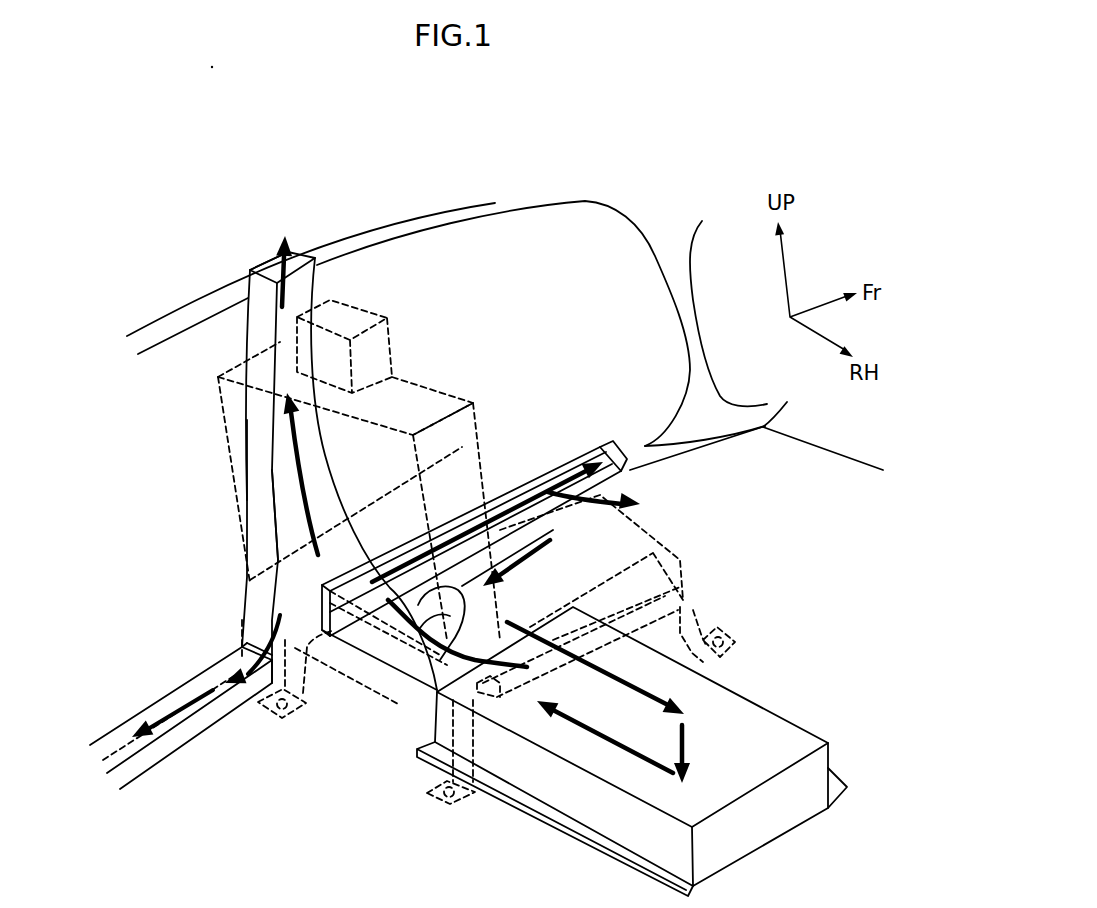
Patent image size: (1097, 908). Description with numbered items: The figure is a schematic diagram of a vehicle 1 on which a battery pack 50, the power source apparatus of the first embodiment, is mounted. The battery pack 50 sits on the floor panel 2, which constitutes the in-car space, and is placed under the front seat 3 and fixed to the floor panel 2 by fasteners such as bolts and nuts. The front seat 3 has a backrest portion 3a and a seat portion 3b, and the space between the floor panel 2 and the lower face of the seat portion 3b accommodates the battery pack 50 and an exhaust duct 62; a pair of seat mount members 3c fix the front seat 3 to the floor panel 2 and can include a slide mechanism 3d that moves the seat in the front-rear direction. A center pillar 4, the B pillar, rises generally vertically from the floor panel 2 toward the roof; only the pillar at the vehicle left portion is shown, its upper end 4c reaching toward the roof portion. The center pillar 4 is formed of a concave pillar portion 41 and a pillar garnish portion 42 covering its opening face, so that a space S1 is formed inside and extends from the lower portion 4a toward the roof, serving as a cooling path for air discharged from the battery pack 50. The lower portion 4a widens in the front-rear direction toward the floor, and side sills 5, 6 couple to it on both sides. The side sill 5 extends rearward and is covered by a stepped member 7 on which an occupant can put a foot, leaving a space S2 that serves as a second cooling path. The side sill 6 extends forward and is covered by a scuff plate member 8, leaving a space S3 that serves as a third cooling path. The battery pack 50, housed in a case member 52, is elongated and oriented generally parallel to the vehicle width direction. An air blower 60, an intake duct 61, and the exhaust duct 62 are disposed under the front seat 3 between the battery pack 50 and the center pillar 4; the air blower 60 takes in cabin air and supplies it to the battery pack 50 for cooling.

The vehicle 1 is at (607, 172).
The floor panel 2 is at (810, 467).
The front seat 3 is at (412, 368).
The backrest portion 3a is at (440, 400).
The seat portion 3b is at (640, 543).
The seat mount member 3c is at (308, 692).
The slide mechanism 3d is at (463, 507).
The center pillar 4 is at (240, 330).
The lower portion 4a is at (257, 637).
The pillar upper end 4c is at (263, 267).
The pillar portion 41 is at (253, 420).
The pillar garnish portion 42 is at (280, 467).
The side sill 5 is at (173, 740).
The side sill 6 is at (682, 454).
The stepped member 7 is at (140, 705).
The scuff plate member 8 is at (602, 442).
The battery pack 50 is at (812, 716).
The case member 52 is at (833, 763).
The air blower 60 is at (467, 585).
The intake duct 61 is at (518, 586).
The exhaust duct 62 is at (390, 663).
The space S1 is at (301, 254).
The space S2 is at (205, 724).
The space S3 is at (564, 455).